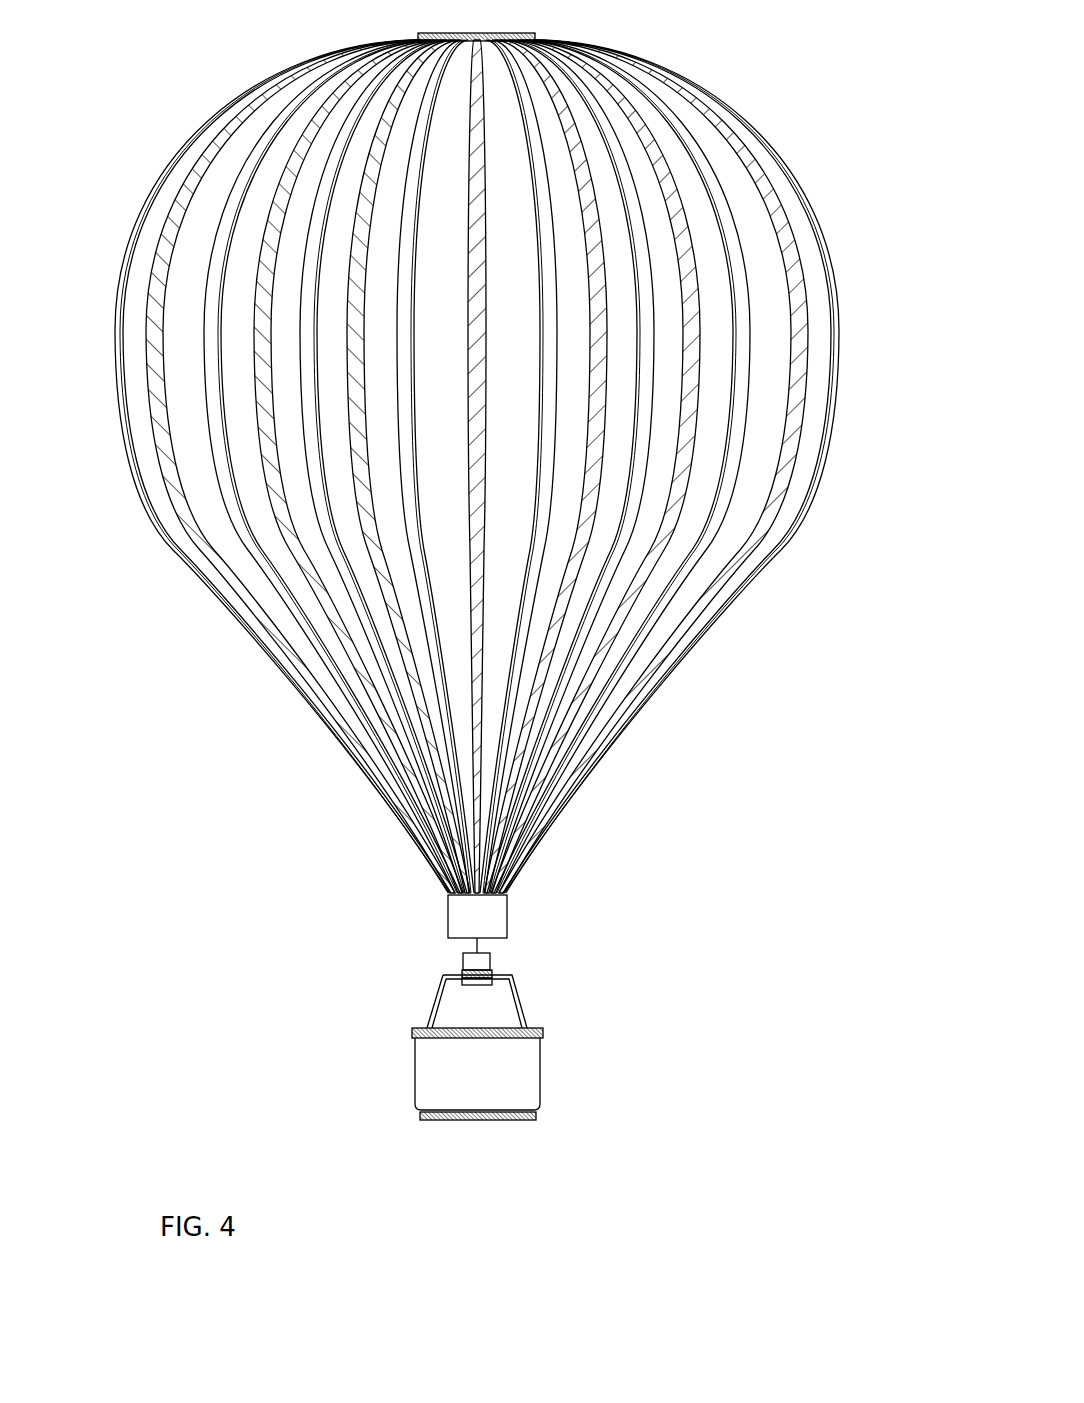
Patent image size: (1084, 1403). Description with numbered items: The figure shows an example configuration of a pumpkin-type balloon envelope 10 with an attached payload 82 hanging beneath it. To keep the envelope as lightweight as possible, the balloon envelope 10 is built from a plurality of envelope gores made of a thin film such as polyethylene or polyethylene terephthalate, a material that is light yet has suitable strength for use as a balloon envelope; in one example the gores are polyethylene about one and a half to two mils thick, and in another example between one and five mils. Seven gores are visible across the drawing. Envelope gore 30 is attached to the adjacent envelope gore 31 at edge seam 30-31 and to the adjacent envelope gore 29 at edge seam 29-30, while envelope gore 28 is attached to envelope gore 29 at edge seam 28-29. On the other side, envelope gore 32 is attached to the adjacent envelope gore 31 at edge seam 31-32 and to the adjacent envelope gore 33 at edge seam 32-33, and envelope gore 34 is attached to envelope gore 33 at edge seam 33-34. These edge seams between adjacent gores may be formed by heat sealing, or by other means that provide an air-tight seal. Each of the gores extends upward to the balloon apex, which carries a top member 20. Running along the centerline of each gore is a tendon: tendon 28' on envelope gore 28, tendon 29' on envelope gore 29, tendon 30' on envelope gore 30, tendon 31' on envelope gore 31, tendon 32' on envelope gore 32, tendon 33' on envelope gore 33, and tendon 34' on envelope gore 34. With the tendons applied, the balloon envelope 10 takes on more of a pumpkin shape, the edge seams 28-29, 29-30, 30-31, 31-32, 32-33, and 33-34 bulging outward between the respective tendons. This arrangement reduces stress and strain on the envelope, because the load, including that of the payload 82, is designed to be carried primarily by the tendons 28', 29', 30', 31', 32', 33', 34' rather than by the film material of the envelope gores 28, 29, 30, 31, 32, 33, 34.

The envelope 10 is at (822, 58).
The top member 20 is at (535, 36).
The envelope gore 28 is at (267, 466).
The envelope gore 29 is at (269, 466).
The envelope gore 30 is at (278, 466).
The envelope gore 31 is at (348, 459).
The envelope gore 32 is at (682, 466).
The envelope gore 33 is at (678, 466).
The envelope gore 34 is at (712, 466).
The tendon 28' is at (296, 466).
The tendon 29' is at (328, 466).
The tendon 30' is at (371, 466).
The tendon 31' is at (348, 466).
The tendon 32' is at (684, 466).
The tendon 33' is at (679, 466).
The tendon 34' is at (678, 466).
The edge seam 28-29 is at (226, 252).
The edge seam 29-30 is at (312, 417).
The edge seam 30-31 is at (412, 428).
The edge seam 31-32 is at (537, 563).
The edge seam 32-33 is at (640, 450).
The edge seam 33-34 is at (750, 368).
The payload 82 is at (520, 1067).